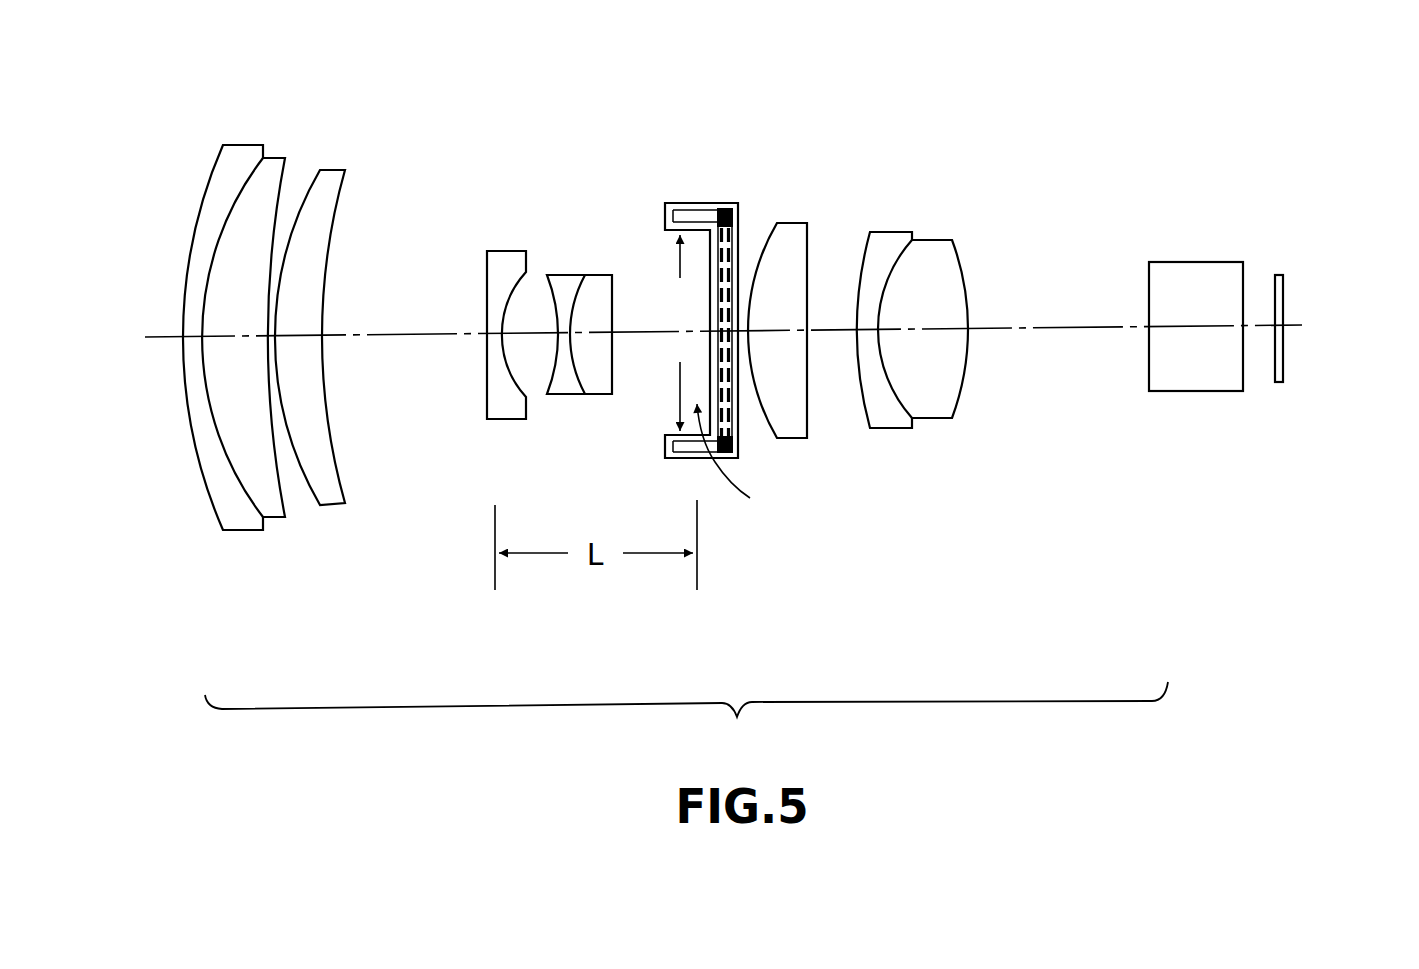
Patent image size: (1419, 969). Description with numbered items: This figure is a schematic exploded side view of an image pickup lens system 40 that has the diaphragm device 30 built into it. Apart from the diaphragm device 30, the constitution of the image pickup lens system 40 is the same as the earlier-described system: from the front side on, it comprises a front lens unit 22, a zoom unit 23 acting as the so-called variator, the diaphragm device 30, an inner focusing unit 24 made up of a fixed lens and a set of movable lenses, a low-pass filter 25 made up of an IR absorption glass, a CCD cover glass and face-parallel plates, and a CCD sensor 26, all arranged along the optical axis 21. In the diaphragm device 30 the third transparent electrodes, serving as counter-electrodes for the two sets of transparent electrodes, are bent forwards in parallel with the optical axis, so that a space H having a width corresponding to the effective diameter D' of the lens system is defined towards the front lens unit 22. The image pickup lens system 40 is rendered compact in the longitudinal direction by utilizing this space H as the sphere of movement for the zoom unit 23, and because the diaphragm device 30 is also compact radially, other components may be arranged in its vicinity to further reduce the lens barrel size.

The optical axis 21 is at (1290, 326).
The front lens unit 22 is at (300, 123).
The zoom unit 23 is at (556, 182).
The inner focusing unit 24 is at (849, 199).
The low-pass filter 25 is at (1192, 262).
The CCD sensor 26 is at (1284, 280).
The diaphragm device 30 is at (732, 184).
The image pickup lens system 40 is at (686, 719).